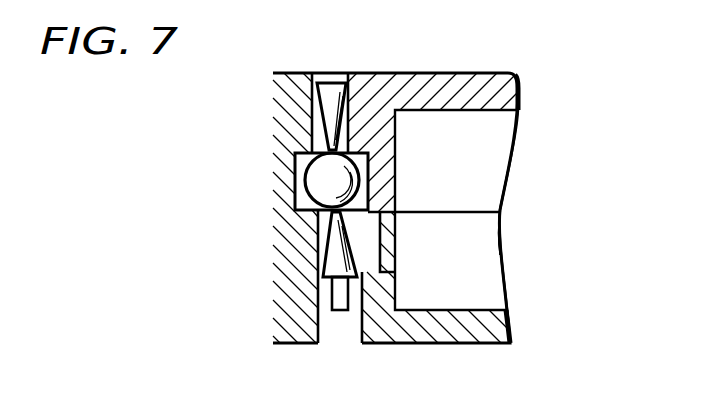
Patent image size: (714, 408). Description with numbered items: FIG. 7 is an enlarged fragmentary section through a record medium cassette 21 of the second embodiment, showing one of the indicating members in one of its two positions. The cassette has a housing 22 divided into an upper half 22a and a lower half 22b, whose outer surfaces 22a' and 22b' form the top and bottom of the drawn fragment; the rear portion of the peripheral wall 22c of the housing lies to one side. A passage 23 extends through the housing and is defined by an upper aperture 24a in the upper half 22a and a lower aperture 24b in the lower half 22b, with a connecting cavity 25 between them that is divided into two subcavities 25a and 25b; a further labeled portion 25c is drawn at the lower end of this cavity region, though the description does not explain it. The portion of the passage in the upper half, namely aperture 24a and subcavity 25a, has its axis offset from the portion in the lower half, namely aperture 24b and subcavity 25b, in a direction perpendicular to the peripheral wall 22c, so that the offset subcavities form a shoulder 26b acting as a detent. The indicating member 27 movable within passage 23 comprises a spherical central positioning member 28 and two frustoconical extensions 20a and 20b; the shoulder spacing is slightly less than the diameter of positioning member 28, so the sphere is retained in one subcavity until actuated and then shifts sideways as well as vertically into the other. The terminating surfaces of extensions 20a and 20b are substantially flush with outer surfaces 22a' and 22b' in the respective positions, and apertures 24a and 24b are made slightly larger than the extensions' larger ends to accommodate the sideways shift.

The record medium cassette 21 is at (508, 73).
The housing 22 is at (583, 174).
The upper half 22a is at (540, 190).
The lower half 22b is at (540, 232).
The outer surface of upper half 22a' is at (433, 129).
The outer surface of lower half 22b' is at (446, 295).
The peripheral wall 22c is at (274, 272).
The frustoconical extension 20a is at (333, 84).
The frustoconical extension 20b is at (394, 262).
The passage 23 is at (362, 346).
The upper aperture 24a is at (318, 133).
The lower aperture 24b is at (327, 300).
The connecting cavity 25 is at (208, 246).
The subcavity 25a is at (296, 191).
The subcavity 25b is at (320, 243).
The valve stem 25c is at (343, 312).
The shoulder 26b is at (397, 213).
The indicating member 27 is at (503, 250).
The spherical central positioning member 28 is at (456, 161).